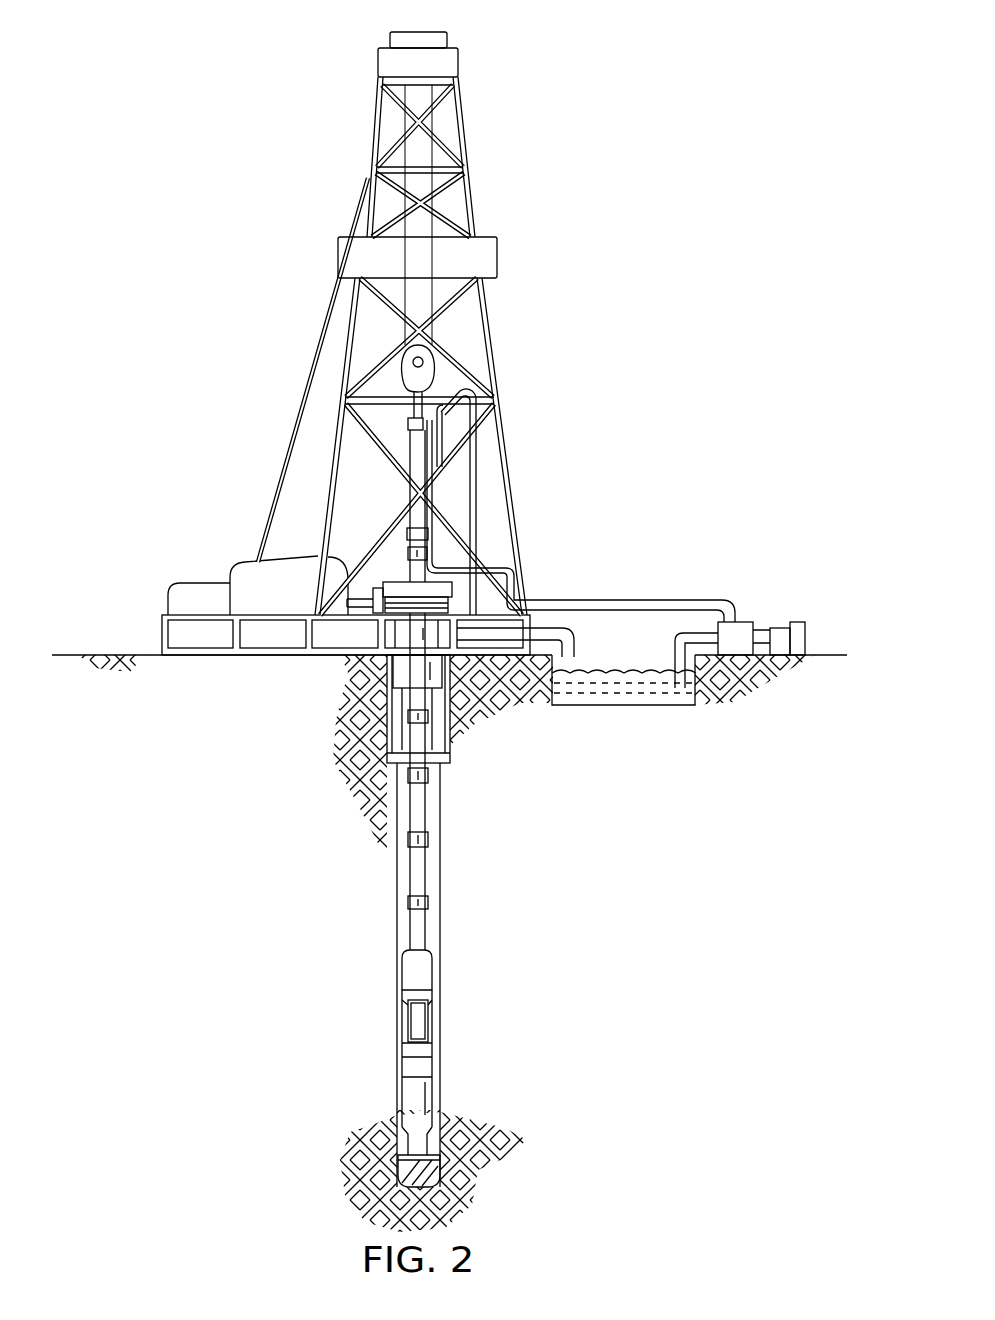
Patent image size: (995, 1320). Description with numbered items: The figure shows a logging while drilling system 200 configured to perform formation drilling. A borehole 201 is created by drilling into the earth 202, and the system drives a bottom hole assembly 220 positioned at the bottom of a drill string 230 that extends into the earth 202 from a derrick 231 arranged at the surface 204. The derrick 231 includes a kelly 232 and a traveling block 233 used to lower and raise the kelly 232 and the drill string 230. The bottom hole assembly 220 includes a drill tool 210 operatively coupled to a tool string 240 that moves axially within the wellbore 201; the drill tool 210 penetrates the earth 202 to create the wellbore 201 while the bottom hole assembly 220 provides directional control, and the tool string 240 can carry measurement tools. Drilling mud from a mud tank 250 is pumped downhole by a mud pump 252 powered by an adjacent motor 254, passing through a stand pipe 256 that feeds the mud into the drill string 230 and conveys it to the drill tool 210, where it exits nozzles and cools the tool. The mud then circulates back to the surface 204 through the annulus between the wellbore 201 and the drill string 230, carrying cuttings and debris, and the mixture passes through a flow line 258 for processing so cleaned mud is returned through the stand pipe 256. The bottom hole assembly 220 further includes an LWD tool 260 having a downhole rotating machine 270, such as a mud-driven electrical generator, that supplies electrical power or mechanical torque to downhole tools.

The logging while drilling (LWD) system 200 is at (266, 86).
The borehole 201 is at (430, 889).
The earth 202 is at (175, 915).
The surface 204 is at (90, 653).
The drill tool 210 is at (440, 1160).
The bottom hole assembly (BHA) 220 is at (331, 898).
The drill string 230 is at (428, 805).
The derrick 231 is at (466, 159).
The kelly 232 is at (415, 453).
The traveling block 233 is at (400, 380).
The tool string 240 is at (411, 1094).
The mud tank 250 is at (623, 681).
The mud pump 252 is at (738, 621).
The motor 254 is at (788, 624).
The stand pipe 256 is at (478, 483).
The flow line 258 is at (555, 630).
The LWD tool 260 is at (407, 993).
The downhole rotating machine 270 is at (408, 1020).